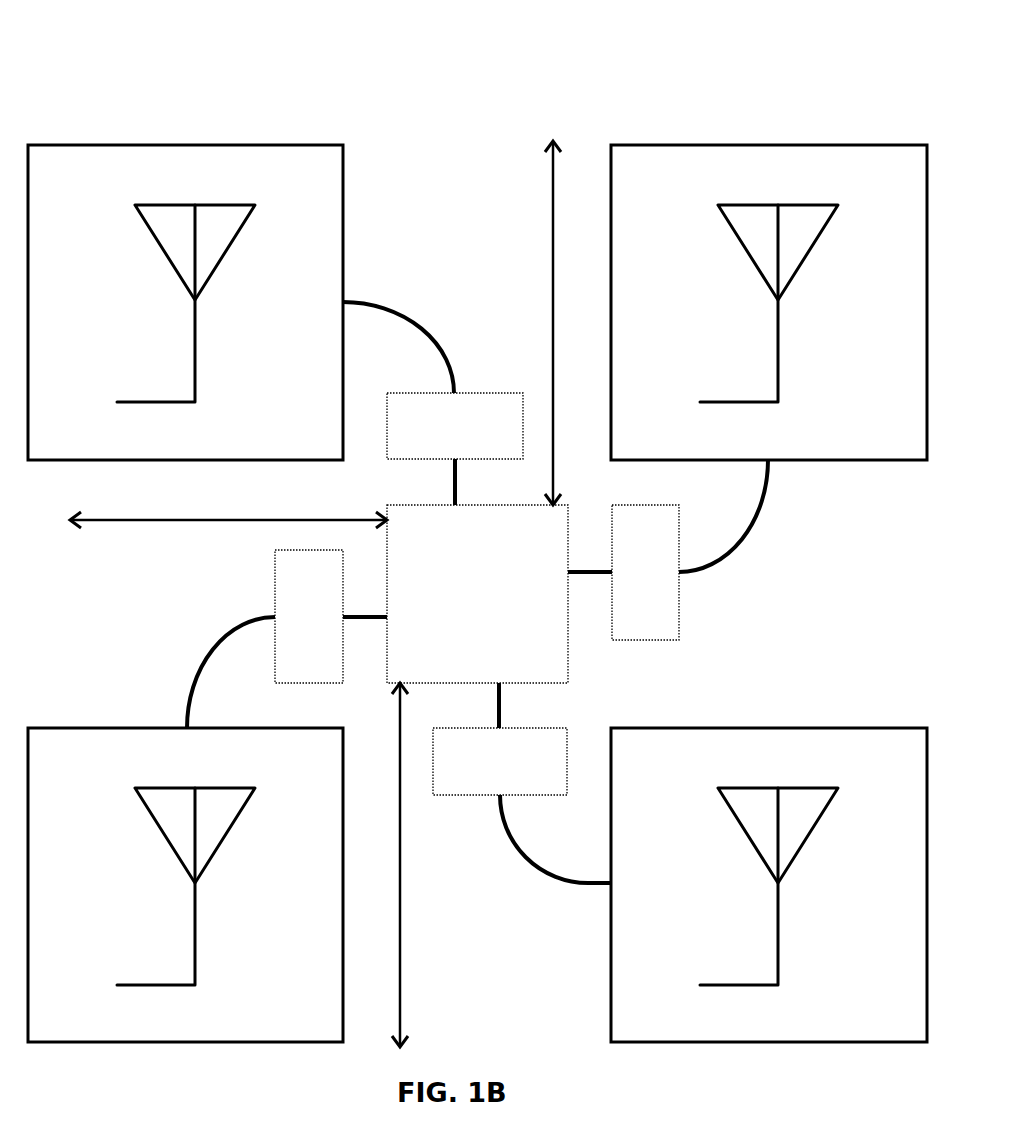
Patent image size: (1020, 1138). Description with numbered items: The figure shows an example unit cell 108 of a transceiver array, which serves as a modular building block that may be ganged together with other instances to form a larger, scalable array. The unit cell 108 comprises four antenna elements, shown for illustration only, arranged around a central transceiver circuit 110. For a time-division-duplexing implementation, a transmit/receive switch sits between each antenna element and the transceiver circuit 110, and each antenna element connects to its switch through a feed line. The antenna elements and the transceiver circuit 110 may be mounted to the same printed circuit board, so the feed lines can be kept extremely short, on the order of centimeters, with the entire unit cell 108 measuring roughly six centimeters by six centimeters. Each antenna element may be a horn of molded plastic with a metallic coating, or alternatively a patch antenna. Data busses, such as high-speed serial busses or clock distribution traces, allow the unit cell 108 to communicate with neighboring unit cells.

The unit cell 108 is at (152, 43).
The transceiver circuit 110 is at (388, 506).